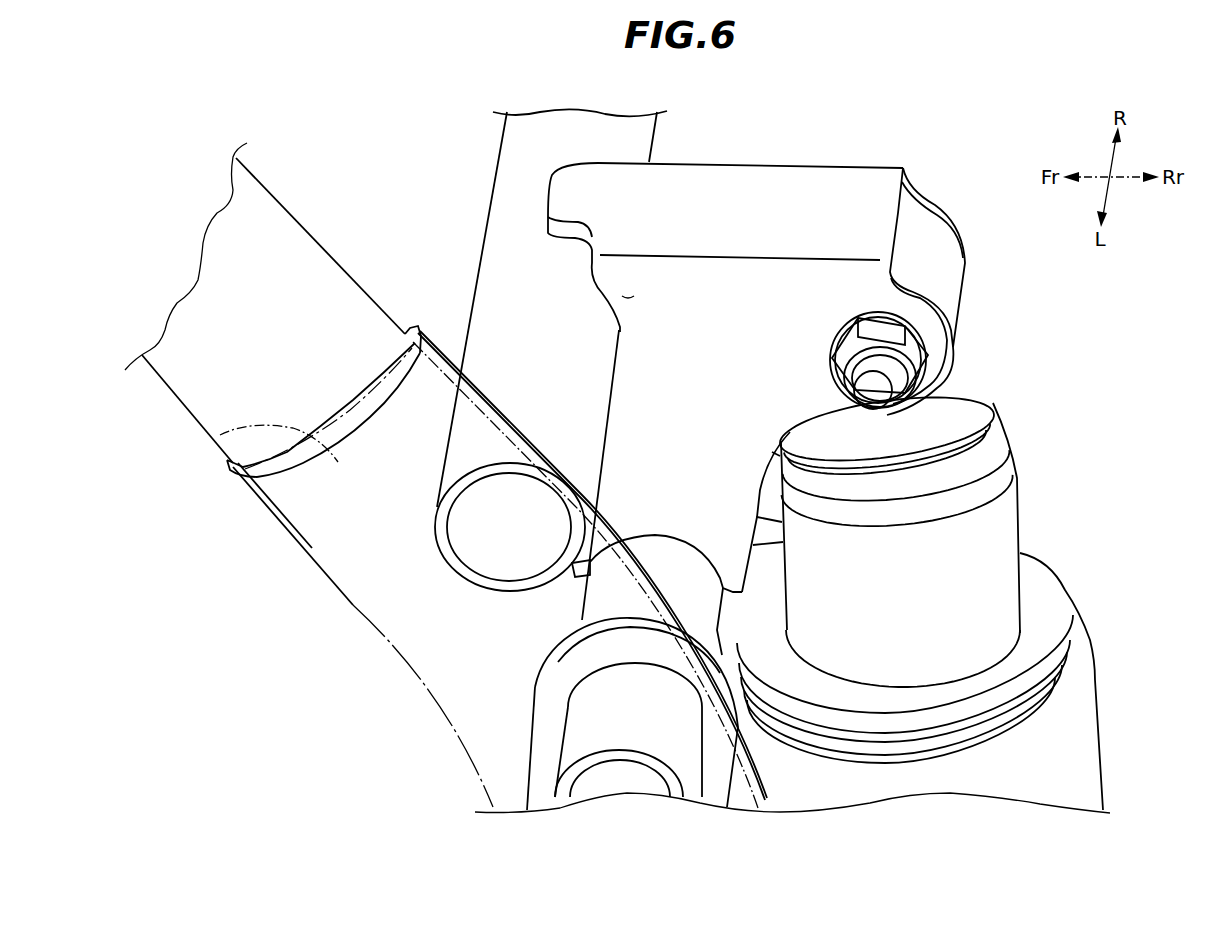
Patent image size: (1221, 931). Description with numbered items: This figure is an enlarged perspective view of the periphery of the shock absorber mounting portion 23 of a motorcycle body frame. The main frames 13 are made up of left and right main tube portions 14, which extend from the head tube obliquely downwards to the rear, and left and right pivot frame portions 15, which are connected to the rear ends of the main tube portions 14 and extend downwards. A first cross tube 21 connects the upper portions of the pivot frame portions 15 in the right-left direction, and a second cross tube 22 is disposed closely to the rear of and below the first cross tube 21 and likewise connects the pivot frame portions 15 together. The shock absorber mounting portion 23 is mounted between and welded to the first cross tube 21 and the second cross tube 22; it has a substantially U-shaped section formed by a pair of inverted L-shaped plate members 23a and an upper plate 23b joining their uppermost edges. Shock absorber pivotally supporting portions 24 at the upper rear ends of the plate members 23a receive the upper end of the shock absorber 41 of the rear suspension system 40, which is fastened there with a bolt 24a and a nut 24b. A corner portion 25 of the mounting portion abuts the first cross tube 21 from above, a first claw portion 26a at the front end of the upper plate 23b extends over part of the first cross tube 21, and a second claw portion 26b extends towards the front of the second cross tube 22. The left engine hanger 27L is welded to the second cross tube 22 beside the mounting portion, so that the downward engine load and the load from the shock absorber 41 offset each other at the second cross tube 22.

The main frame 13 is at (232, 235).
The main tube portion 14 is at (222, 297).
The pivot frame portion 15 is at (220, 435).
The first cross tube 21 is at (560, 132).
The second cross tube 22 is at (623, 723).
The shock absorber mounting portion 23 is at (734, 258).
The plate member 23a is at (708, 352).
The upper plate 23b is at (762, 205).
The shock absorber pivotally supporting portion 24 is at (948, 361).
The bolt 24a is at (875, 392).
The nut 24b is at (907, 353).
The corner portion 25 is at (627, 297).
The first claw portion 26a is at (572, 193).
The second claw portion 26b is at (573, 573).
The engine hanger 27L is at (553, 691).
The rear suspension system 40 is at (1108, 740).
The shock absorber 41 is at (1043, 597).